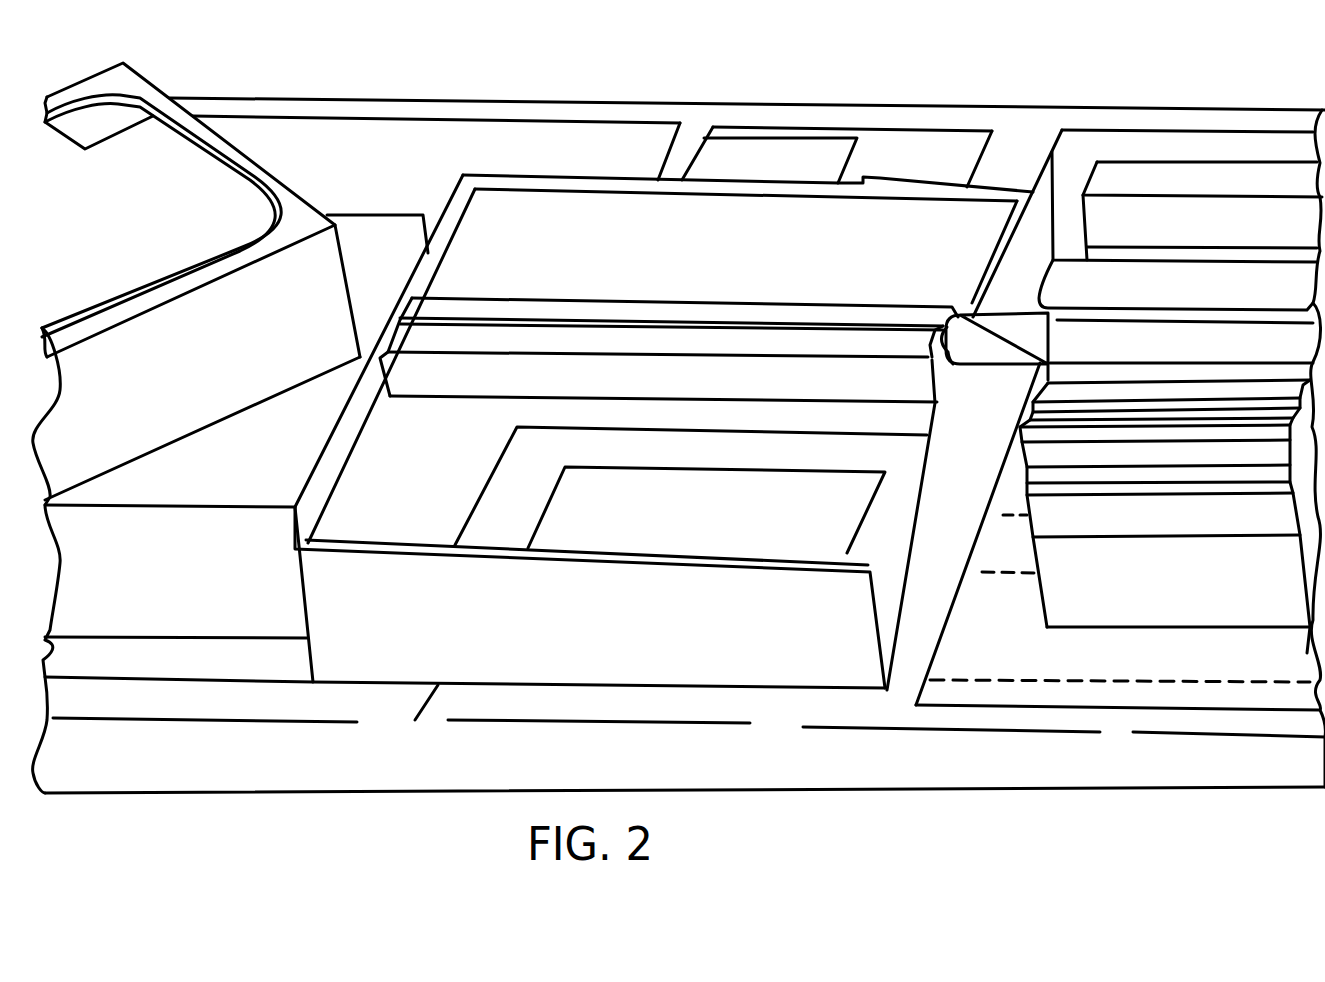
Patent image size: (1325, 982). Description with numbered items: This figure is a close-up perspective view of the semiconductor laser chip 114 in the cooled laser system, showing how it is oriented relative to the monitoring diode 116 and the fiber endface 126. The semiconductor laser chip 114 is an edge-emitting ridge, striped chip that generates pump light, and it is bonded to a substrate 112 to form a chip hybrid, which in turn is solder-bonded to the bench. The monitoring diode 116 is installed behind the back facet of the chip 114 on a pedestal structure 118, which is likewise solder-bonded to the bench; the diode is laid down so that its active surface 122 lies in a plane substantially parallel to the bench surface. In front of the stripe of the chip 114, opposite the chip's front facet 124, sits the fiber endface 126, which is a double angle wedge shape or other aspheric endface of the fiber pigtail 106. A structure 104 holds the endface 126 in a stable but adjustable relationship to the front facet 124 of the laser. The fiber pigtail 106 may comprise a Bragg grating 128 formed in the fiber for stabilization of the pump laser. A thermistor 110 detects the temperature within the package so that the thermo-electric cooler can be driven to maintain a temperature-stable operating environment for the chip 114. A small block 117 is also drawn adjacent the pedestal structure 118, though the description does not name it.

The structure 104 is at (1217, 160).
The fiber pigtail 106 is at (1030, 352).
The thermistor 110 is at (863, 177).
The substrate 112 is at (452, 481).
The semiconductor laser chip 114 is at (603, 303).
The monitoring diode 116 is at (277, 175).
The ramp block 117 is at (350, 288).
The pedestal structure 118 is at (263, 482).
The active surface 122 is at (152, 238).
The front facet 124 is at (943, 335).
The fiber endface 126 is at (950, 362).
The Bragg grating 128 is at (417, 281).